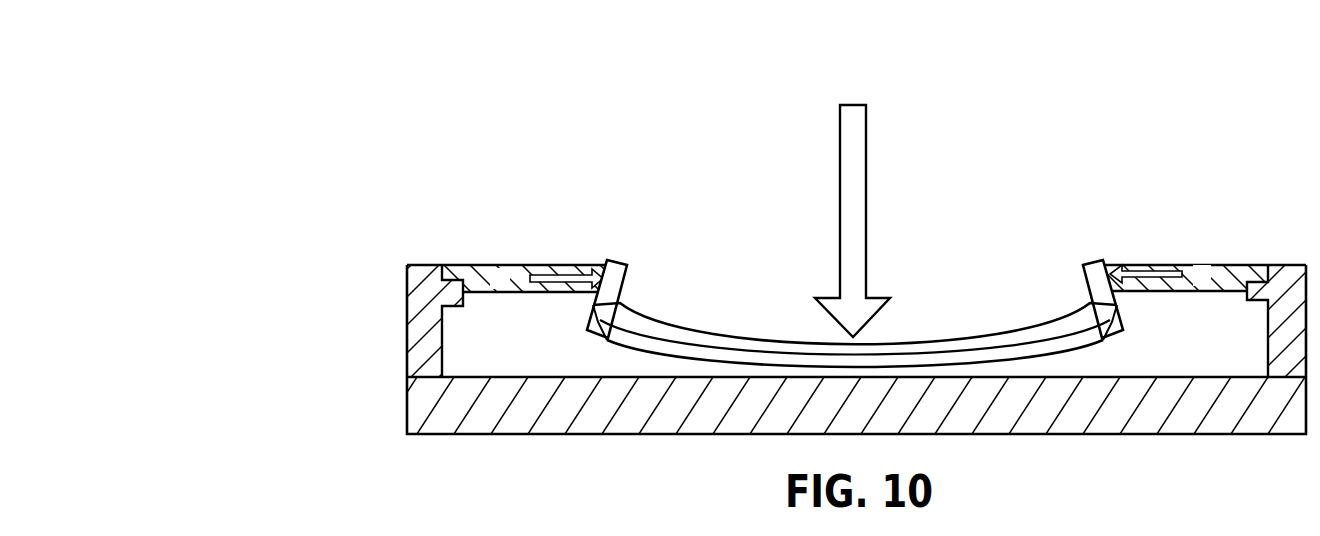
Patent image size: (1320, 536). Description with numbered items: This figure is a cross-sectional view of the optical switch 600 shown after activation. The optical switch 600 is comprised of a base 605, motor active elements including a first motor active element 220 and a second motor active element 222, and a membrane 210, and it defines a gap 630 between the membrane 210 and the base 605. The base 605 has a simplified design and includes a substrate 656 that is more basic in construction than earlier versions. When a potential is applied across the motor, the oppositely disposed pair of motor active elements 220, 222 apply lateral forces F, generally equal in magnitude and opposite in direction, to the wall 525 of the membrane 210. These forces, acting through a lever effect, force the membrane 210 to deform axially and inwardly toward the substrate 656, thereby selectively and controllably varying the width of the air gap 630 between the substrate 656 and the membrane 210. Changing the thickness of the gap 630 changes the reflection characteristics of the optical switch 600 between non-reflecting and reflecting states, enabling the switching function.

The optical switch 600 is at (803, 232).
The base 605 is at (398, 323).
The substrate 656 is at (873, 418).
The gap 630 is at (613, 371).
The motor active element 220 is at (522, 265).
The motor active element 222 is at (1217, 263).
The wall 525 is at (1080, 283).
The membrane 210 is at (970, 330).